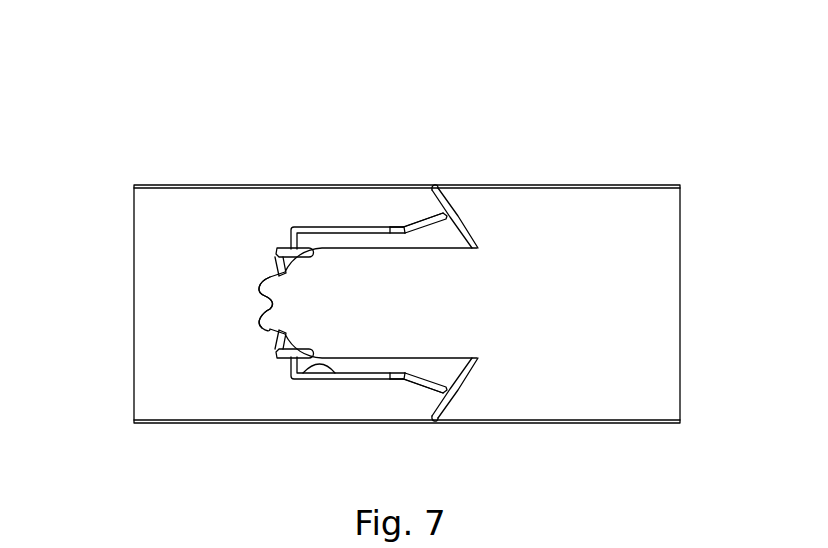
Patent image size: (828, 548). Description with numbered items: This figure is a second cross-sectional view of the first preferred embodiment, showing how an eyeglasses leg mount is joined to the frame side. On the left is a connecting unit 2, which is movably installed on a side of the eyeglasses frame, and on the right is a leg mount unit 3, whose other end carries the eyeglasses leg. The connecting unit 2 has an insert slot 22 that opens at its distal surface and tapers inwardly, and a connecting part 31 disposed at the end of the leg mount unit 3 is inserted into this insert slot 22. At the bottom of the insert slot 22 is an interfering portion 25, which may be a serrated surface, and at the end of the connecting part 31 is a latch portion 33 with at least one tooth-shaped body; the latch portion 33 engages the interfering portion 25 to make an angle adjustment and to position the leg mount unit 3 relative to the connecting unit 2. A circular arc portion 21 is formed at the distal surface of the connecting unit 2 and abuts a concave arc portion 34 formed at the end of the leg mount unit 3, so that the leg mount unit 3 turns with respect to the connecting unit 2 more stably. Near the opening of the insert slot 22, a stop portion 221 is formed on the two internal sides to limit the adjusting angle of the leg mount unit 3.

The connecting unit 2 is at (158, 158).
The leg mount unit 3 is at (651, 152).
The circular arc portion 21 is at (444, 215).
The insert slot 22 is at (303, 373).
The stop portion 221 is at (425, 222).
The interfering portion 25 is at (283, 250).
The connecting part 31 is at (383, 347).
The latch portion 33 is at (266, 312).
The concave arc portion 34 is at (462, 220).